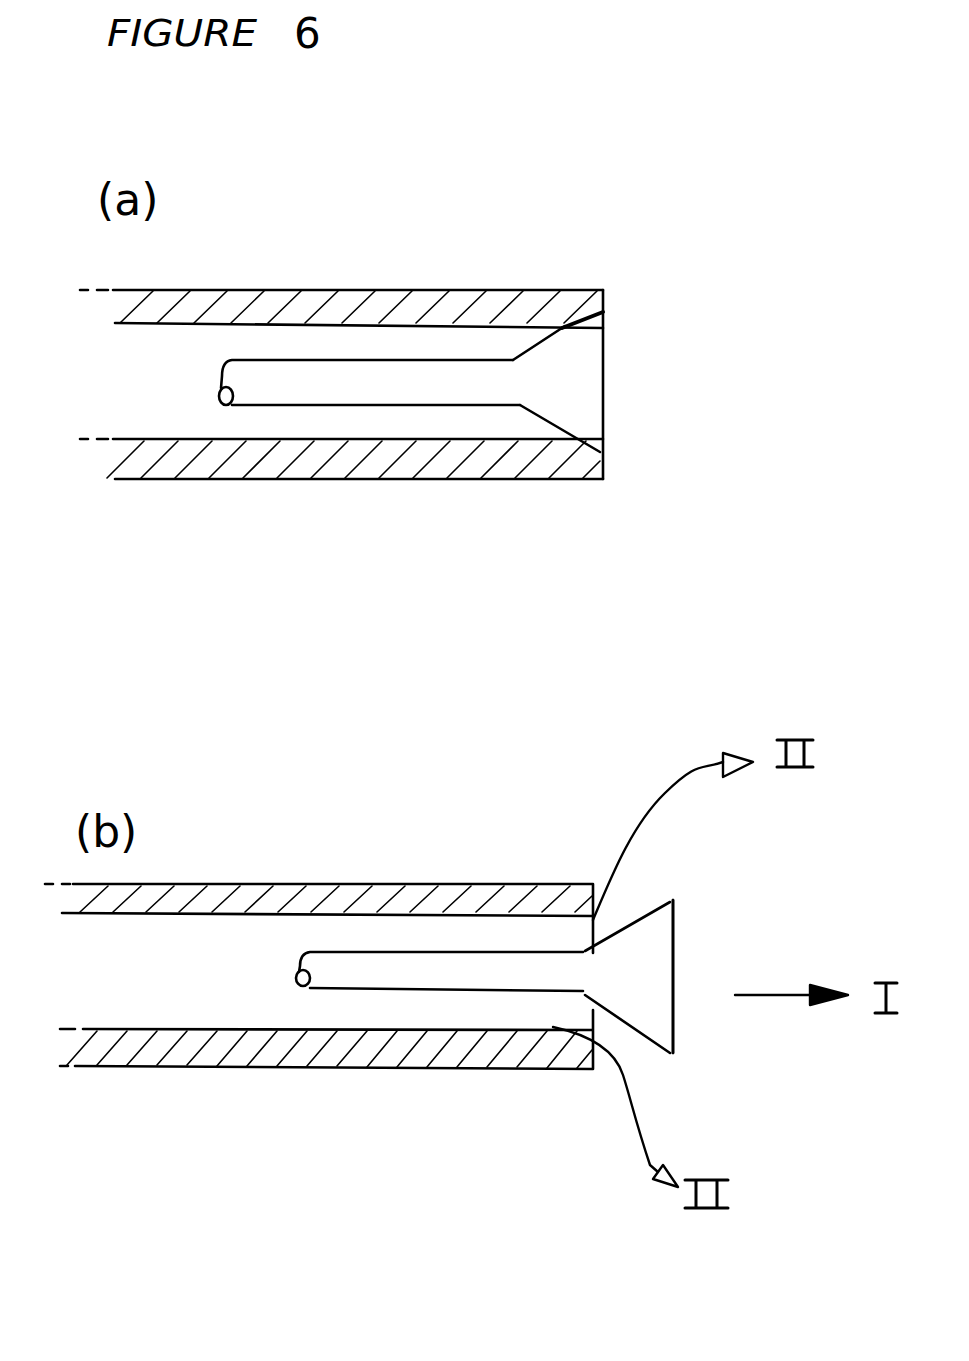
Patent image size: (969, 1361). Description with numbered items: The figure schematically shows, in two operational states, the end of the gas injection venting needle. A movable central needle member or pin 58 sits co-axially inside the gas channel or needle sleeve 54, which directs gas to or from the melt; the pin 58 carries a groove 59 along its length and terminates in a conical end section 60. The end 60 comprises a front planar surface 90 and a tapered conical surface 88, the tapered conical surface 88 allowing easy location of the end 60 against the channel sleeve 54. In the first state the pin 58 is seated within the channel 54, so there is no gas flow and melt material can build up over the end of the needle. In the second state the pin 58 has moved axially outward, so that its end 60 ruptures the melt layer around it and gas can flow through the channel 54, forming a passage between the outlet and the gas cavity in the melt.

The gas channel or needle sleeve 54 is at (355, 287).
The movable central needle member or pin 58 is at (335, 385).
The groove 59 is at (463, 335).
The tapered conical surface 88 is at (560, 330).
The conical end section 60 is at (567, 378).
The front planar surface 90 is at (607, 387).